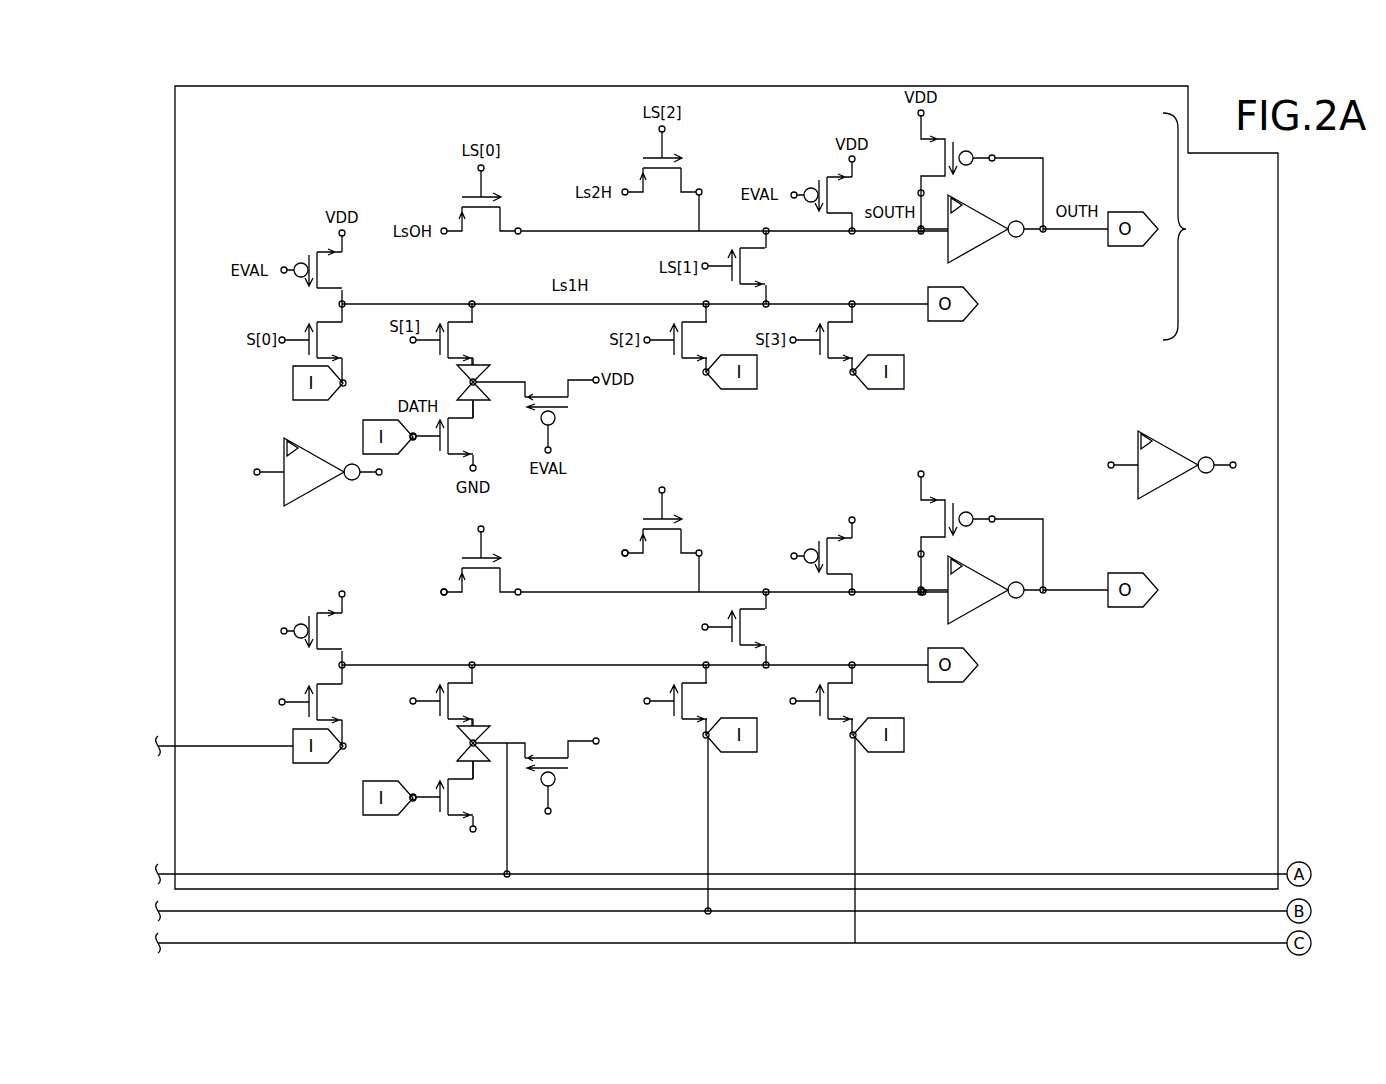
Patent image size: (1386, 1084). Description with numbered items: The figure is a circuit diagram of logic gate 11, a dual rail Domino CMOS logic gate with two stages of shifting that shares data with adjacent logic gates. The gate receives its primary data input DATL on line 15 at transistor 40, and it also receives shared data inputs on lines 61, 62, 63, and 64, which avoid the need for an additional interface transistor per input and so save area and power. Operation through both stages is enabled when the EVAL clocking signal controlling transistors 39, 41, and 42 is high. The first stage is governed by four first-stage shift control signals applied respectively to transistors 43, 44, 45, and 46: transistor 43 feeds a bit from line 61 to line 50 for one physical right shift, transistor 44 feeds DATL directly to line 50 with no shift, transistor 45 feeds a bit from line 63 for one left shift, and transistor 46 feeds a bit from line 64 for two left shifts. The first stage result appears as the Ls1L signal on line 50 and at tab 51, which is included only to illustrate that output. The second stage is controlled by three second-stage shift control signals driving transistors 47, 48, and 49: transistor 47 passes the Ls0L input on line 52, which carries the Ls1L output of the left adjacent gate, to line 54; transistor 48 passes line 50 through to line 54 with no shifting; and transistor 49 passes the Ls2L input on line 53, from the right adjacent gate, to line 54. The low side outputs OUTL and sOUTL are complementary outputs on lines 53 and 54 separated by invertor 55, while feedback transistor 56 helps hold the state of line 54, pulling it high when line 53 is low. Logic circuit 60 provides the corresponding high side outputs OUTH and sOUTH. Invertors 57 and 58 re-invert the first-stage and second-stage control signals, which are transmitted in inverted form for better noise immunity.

The logic gate 11 is at (175, 213).
The line 15 is at (432, 798).
The transistor 39 is at (820, 545).
The transistor 40 is at (445, 777).
The transistor 41 is at (310, 650).
The transistor 42 is at (568, 772).
The transistor 43 is at (312, 712).
The transistor 44 is at (447, 677).
The transistor 45 is at (675, 708).
The transistor 46 is at (822, 710).
The transistor 47 is at (477, 557).
The transistor 48 is at (740, 637).
The transistor 49 is at (672, 525).
The line 50 is at (645, 660).
The tab 51 is at (950, 682).
The line 52 is at (460, 598).
The line 53 is at (643, 557).
The line 54 is at (883, 595).
The invertor 55 is at (980, 612).
The feedback transistor 56 is at (958, 508).
The invertor 57 is at (282, 462).
The invertor 58 is at (1163, 440).
The logic circuit 60 is at (1195, 226).
The line 61 is at (165, 743).
The line 62 is at (507, 850).
The line 63 is at (708, 838).
The line 64 is at (855, 842).